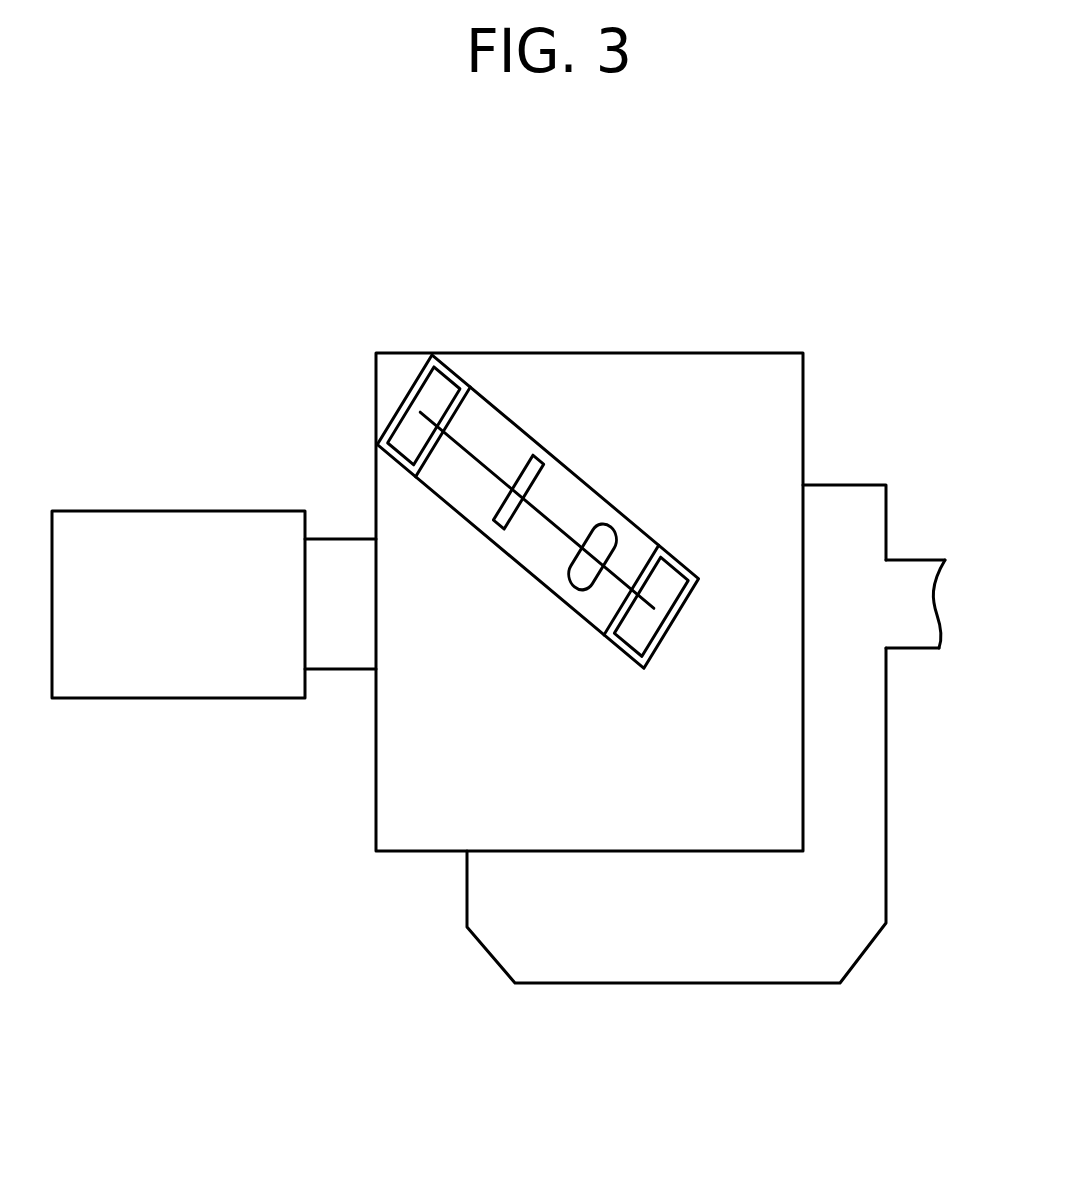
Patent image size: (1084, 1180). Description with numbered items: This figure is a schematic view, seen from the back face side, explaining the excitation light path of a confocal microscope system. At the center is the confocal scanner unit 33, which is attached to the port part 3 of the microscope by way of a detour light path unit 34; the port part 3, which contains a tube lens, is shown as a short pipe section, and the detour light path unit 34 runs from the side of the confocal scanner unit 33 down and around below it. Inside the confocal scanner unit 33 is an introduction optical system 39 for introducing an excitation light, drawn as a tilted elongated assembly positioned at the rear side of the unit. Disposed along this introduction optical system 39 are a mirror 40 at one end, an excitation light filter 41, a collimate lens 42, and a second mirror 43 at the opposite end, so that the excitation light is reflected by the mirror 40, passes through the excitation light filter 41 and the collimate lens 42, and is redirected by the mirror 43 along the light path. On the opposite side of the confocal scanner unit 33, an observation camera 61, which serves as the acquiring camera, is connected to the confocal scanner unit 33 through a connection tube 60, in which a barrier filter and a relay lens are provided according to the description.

The port part 3 is at (915, 648).
The confocal scanner unit 33 is at (732, 353).
The detour light path unit 34 is at (830, 485).
The introduction optical system 39 is at (617, 497).
The mirror 40 is at (446, 355).
The excitation light filter 41 is at (533, 455).
The collimate lens 42 is at (593, 530).
The mirror 43 is at (683, 552).
The connection tube 60 is at (333, 670).
The observation camera 61 is at (103, 700).